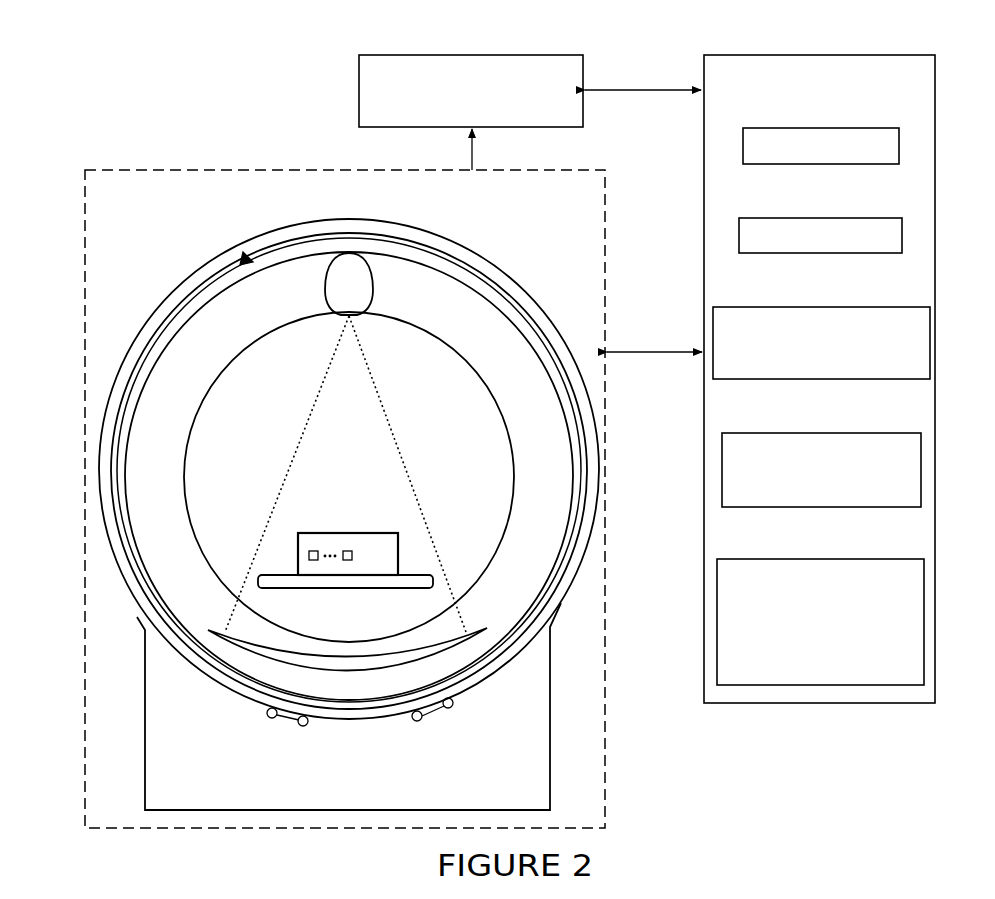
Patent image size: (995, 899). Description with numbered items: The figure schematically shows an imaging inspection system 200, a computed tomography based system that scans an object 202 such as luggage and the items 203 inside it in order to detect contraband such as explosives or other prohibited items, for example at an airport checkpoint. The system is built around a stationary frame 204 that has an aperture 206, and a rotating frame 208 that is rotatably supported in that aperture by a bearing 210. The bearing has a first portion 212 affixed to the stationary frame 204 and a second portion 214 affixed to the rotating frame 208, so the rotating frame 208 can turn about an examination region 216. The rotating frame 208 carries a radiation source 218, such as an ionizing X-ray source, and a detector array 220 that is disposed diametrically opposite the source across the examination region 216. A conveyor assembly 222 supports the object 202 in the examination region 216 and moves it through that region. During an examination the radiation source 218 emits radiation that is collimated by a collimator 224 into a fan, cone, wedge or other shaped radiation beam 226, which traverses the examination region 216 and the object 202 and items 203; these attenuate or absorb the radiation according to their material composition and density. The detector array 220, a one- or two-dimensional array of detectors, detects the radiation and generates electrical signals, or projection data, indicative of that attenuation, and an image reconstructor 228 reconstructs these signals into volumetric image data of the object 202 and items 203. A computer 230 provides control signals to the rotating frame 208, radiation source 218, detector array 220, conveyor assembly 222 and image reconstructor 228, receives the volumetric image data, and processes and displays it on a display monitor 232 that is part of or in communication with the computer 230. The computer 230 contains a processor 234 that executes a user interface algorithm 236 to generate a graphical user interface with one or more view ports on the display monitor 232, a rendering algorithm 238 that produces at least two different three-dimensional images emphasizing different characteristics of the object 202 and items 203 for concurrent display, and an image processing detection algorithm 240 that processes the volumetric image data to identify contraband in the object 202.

The imaging inspection system 200 is at (150, 30).
The object 202 is at (380, 533).
The items 203 is at (296, 531).
The stationary frame 204 is at (606, 198).
The aperture 206 is at (453, 262).
The rotating frame 208 is at (472, 313).
The bearing 210 is at (357, 202).
The first portion 212 is at (408, 235).
The second portion 214 is at (383, 243).
The examination region 216 is at (336, 518).
The radiation source 218 is at (327, 283).
The detector array 220 is at (312, 671).
The conveyor assembly 222 is at (407, 575).
The collimator 224 is at (362, 316).
The radiation beam 226 is at (390, 432).
The image reconstructor 228 is at (359, 90).
The computer 230 is at (704, 150).
The display monitor 232 is at (823, 128).
The processor 234 is at (823, 218).
The user interface algorithm 236 is at (823, 307).
The rendering algorithm 238 is at (823, 433).
The image processing detection algorithm 240 is at (823, 559).